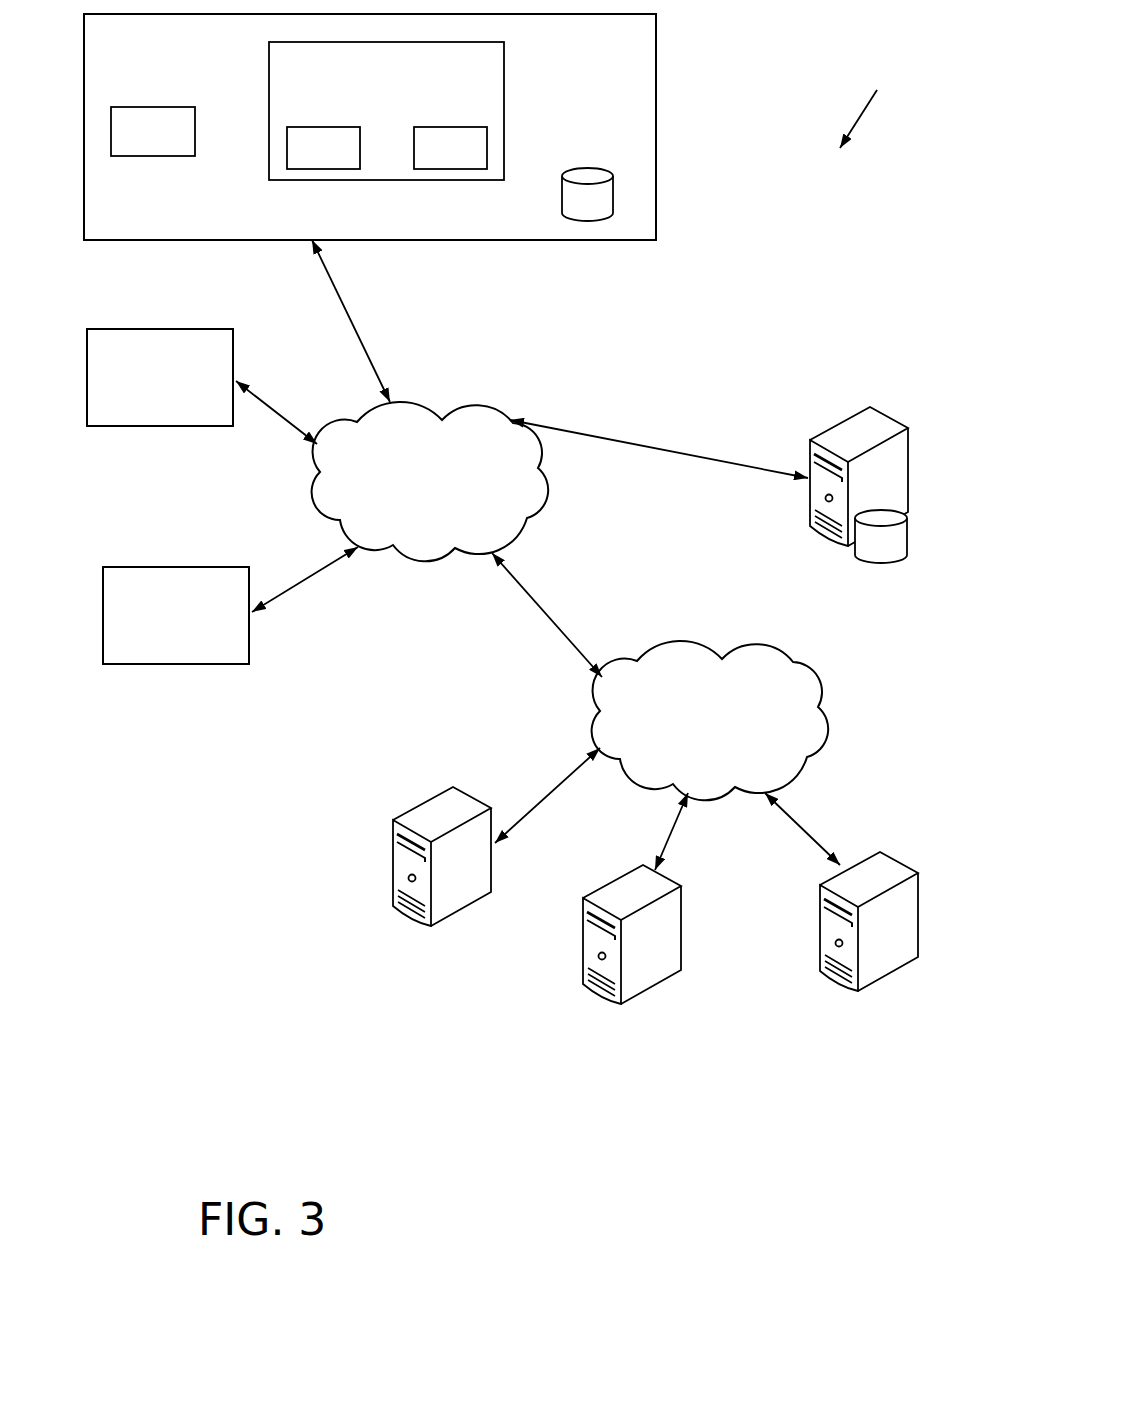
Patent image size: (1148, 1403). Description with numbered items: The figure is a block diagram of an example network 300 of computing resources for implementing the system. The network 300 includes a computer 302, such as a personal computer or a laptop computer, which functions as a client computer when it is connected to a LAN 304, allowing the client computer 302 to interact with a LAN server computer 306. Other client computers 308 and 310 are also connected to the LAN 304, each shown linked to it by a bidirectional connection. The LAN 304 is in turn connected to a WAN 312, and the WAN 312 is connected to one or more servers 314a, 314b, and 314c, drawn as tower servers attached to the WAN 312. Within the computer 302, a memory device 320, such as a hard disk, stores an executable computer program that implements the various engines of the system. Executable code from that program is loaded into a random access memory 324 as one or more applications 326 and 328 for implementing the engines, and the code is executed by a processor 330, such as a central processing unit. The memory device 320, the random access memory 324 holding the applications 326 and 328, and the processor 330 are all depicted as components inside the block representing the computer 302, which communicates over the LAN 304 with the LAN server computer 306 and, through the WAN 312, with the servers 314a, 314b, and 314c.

The network 300 is at (874, 104).
The computer 302 is at (657, 162).
The LAN 304 is at (417, 403).
The LAN server computer 306 is at (837, 423).
The client computer 308 is at (194, 329).
The client computer 310 is at (215, 567).
The WAN 312 is at (733, 647).
The server 314a is at (428, 802).
The server 314b is at (583, 947).
The server 314c is at (820, 945).
The memory device 320 is at (588, 168).
The random access memory 324 is at (504, 98).
The application 326 is at (309, 127).
The application 328 is at (425, 127).
The processor 330 is at (133, 107).